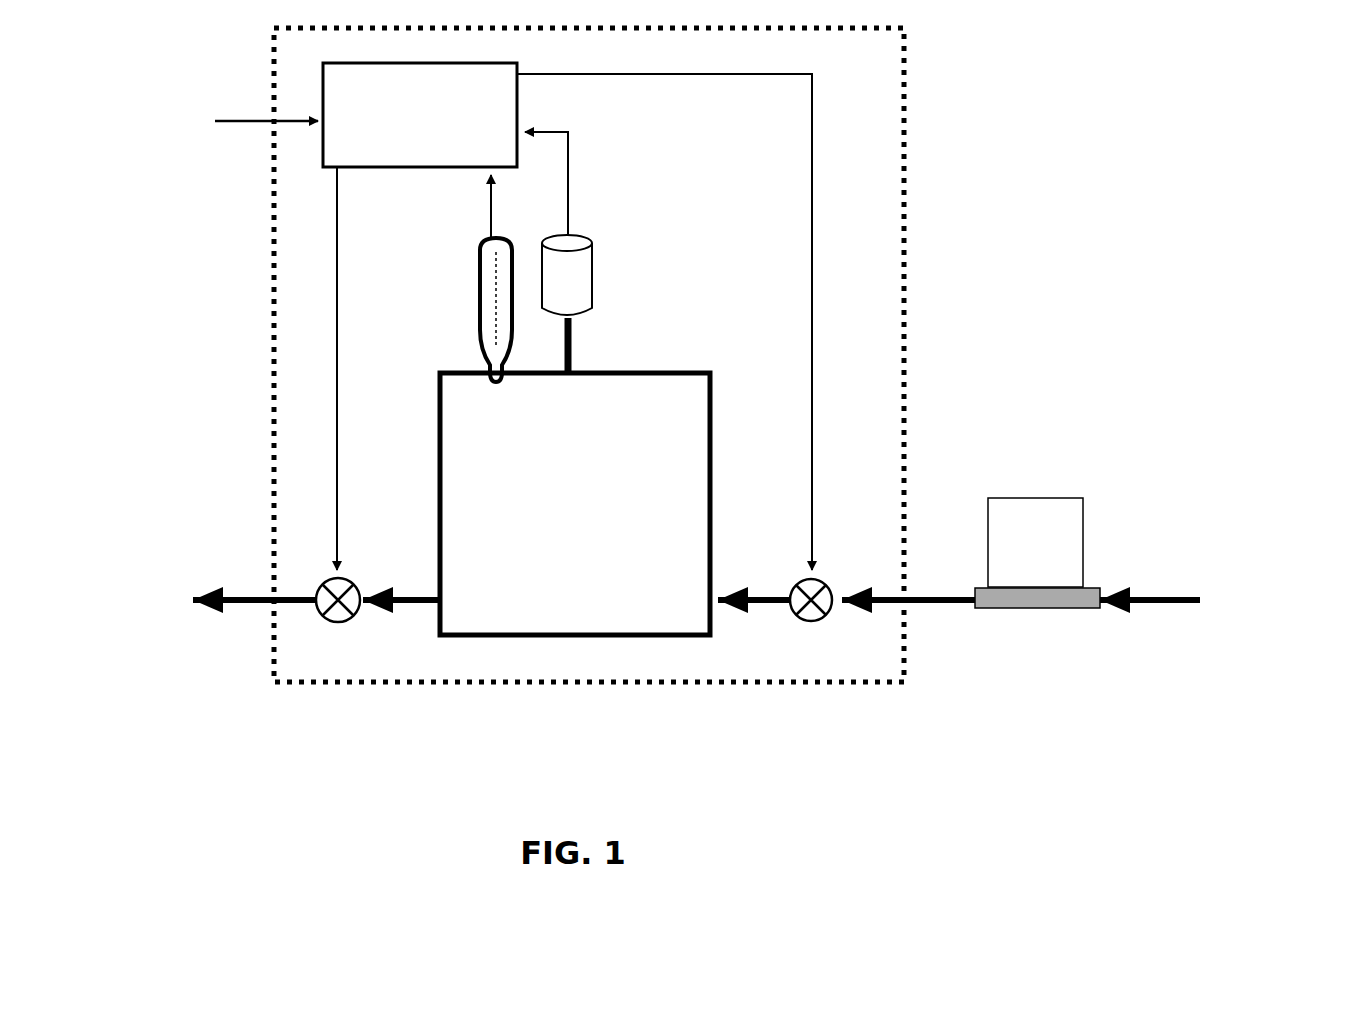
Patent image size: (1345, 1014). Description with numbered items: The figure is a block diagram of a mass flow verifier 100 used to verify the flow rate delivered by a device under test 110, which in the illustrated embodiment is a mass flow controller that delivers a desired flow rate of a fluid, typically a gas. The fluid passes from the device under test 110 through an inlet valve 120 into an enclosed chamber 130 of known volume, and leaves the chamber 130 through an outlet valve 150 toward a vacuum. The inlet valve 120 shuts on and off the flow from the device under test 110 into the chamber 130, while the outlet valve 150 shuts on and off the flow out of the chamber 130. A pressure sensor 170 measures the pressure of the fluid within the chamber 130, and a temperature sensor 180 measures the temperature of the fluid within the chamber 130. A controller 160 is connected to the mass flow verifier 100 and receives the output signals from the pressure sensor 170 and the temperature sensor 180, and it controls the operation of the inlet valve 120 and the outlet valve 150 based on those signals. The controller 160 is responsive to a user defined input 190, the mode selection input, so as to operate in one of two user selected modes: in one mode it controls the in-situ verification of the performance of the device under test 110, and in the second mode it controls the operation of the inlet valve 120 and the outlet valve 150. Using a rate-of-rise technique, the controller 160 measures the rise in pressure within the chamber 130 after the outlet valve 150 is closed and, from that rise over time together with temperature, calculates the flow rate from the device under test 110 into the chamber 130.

The mass flow verifier 100 is at (650, 690).
The device under test 110 is at (1068, 520).
The inlet valve 120 is at (828, 622).
The chamber 130 is at (575, 504).
The outlet valve 150 is at (313, 614).
The controller 160 is at (567, 316).
The pressure sensor 170 is at (582, 268).
The temperature sensor 180 is at (480, 318).
The user defined input 190 is at (204, 127).